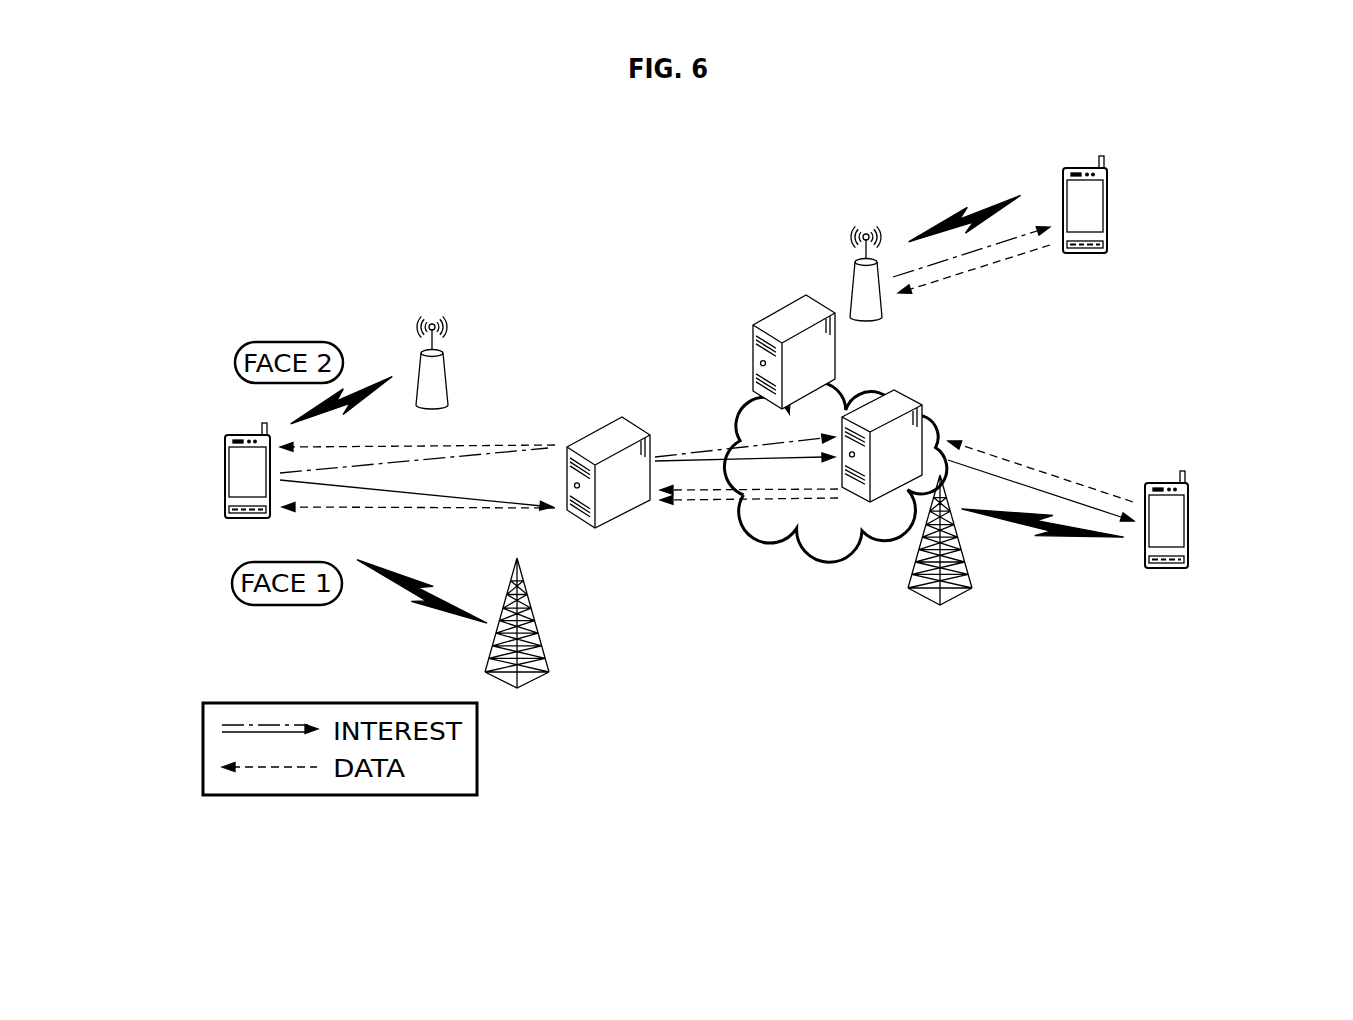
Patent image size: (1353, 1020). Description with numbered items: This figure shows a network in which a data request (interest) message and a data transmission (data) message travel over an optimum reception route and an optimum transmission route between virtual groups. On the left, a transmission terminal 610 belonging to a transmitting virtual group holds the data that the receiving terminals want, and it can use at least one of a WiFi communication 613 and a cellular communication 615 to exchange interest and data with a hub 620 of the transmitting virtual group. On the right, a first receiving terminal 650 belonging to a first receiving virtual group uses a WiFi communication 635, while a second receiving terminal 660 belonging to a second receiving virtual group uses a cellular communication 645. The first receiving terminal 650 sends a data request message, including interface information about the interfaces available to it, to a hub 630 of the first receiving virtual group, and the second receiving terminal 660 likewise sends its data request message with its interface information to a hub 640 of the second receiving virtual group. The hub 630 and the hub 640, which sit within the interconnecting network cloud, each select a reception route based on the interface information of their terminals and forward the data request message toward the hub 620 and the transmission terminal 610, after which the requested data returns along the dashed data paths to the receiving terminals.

The transmission terminal 610 is at (225, 467).
The WiFi communication 613 is at (447, 368).
The cellular communication 615 is at (532, 628).
The hub 620 is at (607, 417).
The hub 630 is at (780, 311).
The WiFi communication 635 is at (860, 228).
The hub 640 is at (925, 400).
The cellular communication 645 is at (958, 590).
The first receiving terminal 650 is at (1110, 207).
The second receiving terminal 660 is at (1190, 522).